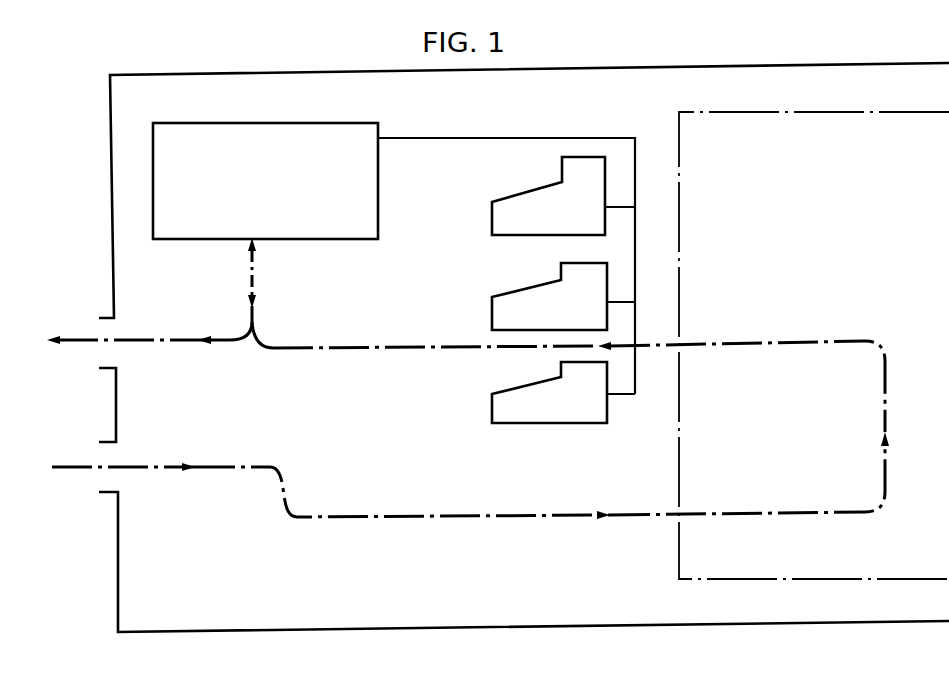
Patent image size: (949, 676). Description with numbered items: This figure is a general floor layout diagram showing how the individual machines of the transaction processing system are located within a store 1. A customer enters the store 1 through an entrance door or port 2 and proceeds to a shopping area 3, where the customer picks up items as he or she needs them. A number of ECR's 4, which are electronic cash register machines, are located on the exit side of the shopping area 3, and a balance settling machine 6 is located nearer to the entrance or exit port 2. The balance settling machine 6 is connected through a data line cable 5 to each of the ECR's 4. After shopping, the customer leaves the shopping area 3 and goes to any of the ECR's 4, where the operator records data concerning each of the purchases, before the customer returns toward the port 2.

The store 1 is at (595, 67).
The entrance door or port 2 is at (120, 350).
The shopping area 3 is at (808, 112).
The ECR's (electronic cash register machines) 4 is at (492, 228).
The data line cable 5 is at (477, 138).
The balance settling machine 6 is at (378, 183).